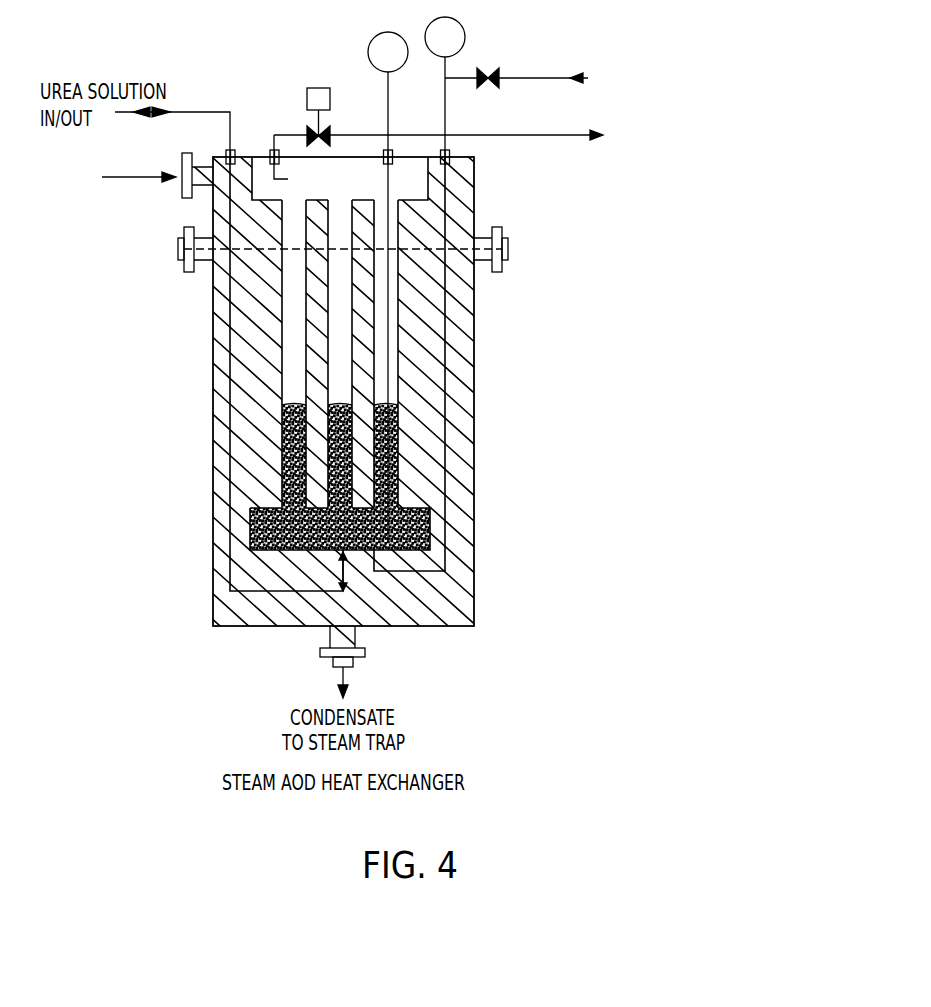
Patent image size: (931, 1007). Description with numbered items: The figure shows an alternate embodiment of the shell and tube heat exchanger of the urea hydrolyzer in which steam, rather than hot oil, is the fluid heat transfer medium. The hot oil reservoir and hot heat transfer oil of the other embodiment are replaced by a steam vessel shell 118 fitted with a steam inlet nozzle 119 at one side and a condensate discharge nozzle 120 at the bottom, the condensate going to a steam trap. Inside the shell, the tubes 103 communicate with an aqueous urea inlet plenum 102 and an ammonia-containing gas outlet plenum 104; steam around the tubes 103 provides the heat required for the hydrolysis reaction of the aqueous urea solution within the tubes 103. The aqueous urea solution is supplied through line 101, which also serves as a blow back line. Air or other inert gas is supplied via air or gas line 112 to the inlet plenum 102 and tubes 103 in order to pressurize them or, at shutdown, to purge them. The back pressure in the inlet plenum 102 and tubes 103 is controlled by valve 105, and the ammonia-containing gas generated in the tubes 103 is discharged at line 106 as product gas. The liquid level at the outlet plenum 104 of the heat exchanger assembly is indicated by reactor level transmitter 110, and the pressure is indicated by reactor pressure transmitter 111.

The aqueous urea solution line 101 is at (200, 111).
The aqueous urea inlet plenum 102 is at (250, 528).
The tubes 103 is at (280, 362).
The ammonia-containing gas outlet plenum 104 is at (247, 185).
The valve 105 is at (316, 125).
The ammonia gas discharge line 106 is at (500, 137).
The reactor level transmitter 110 is at (385, 82).
The reactor pressure transmitter 111 is at (447, 63).
The air or gas line 112 is at (538, 77).
The steam vessel shell 118 is at (474, 325).
The steam inlet nozzle 119 is at (181, 165).
The condensate discharge nozzle 120 is at (355, 660).